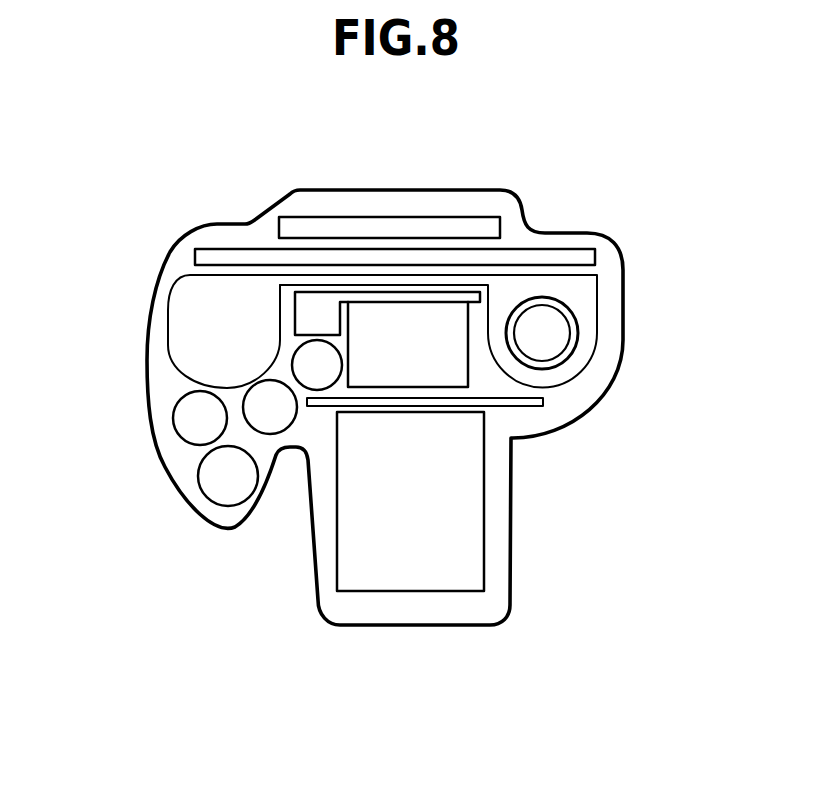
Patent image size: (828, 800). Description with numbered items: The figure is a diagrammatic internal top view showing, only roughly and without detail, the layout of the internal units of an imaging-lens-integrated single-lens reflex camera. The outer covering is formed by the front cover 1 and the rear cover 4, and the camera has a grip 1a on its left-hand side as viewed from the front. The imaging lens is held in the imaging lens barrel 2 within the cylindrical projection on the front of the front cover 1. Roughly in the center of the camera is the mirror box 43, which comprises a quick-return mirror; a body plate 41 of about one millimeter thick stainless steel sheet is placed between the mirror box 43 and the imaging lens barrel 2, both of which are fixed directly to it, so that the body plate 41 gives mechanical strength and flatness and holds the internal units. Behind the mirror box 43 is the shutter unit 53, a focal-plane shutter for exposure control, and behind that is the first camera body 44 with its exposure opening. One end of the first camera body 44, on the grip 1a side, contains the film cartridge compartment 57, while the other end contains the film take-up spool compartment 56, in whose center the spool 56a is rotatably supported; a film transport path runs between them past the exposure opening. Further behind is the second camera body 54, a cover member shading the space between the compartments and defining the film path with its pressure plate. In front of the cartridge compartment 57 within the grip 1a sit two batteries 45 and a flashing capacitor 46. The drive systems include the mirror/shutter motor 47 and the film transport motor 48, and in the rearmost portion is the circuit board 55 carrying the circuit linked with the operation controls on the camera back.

The front cover 1 is at (480, 606).
The grip 1a is at (160, 402).
The imaging lens barrel 2 is at (462, 540).
The rear cover 4 is at (488, 202).
The body plate 41 is at (510, 402).
The mirror box 43 is at (425, 373).
The first camera body 44 is at (525, 288).
The batteries 45 is at (190, 432).
The flashing capacitor 46 is at (268, 415).
The mirror/shutter motor 47 is at (307, 363).
The film transport motor 48 is at (540, 348).
The shutter unit 53 is at (315, 305).
The second camera body 54 is at (562, 255).
The circuit board 55 is at (367, 225).
The film take-up spool compartment 56 is at (587, 337).
The spool 56a is at (560, 352).
The film cartridge compartment 57 is at (192, 312).